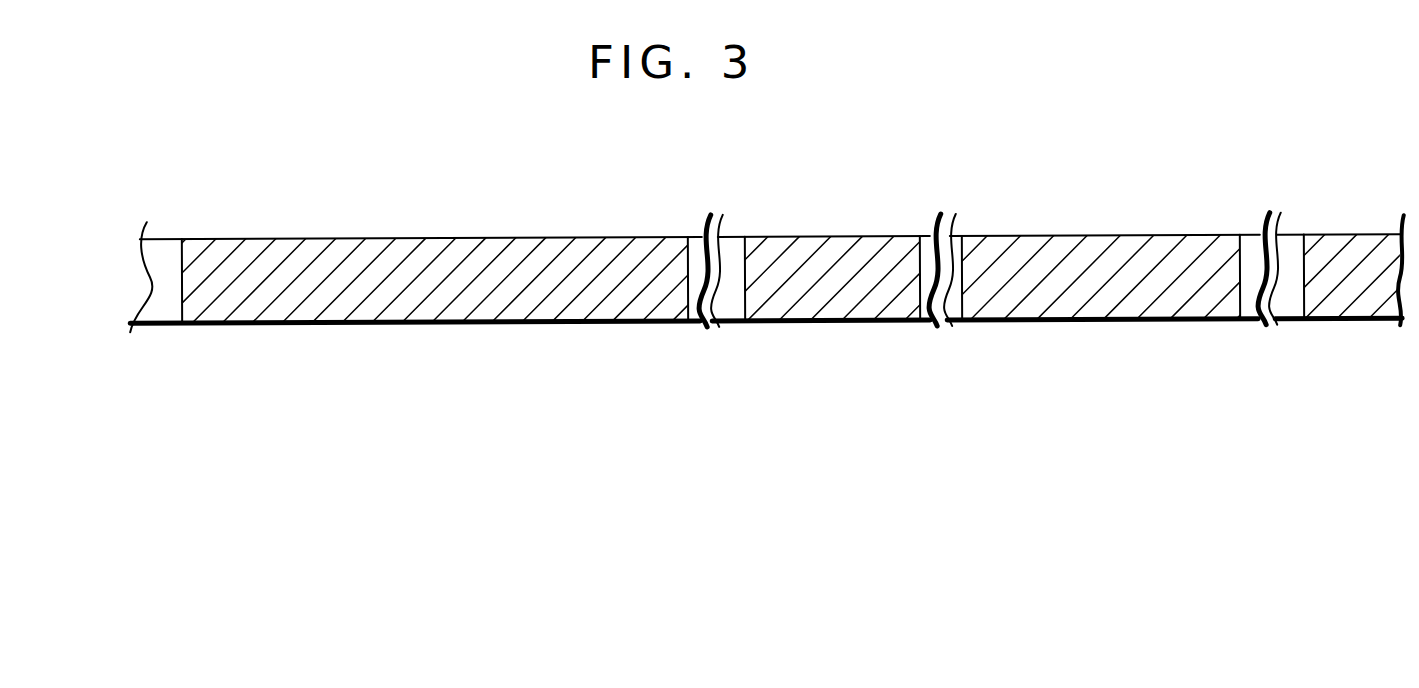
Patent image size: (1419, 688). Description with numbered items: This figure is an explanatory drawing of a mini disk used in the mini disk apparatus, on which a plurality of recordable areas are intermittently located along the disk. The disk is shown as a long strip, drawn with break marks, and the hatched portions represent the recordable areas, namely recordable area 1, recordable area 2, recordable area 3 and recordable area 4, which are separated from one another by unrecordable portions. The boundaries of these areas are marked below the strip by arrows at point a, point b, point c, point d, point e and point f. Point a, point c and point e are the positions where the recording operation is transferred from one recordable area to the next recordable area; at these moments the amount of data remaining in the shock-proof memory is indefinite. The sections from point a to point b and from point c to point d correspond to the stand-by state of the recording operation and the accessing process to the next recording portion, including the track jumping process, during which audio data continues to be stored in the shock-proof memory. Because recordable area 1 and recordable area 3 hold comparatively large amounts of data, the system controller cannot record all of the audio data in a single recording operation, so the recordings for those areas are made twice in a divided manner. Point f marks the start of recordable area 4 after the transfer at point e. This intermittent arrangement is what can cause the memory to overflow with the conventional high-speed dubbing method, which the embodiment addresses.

The recordable area 1 is at (414, 280).
The recordable area 2 is at (820, 278).
The recordable area 3 is at (1095, 278).
The recordable area 4 is at (1314, 276).
The point a is at (694, 340).
The point b is at (751, 340).
The point c is at (926, 340).
The point d is at (968, 340).
The point e is at (1246, 340).
The point f is at (1310, 340).